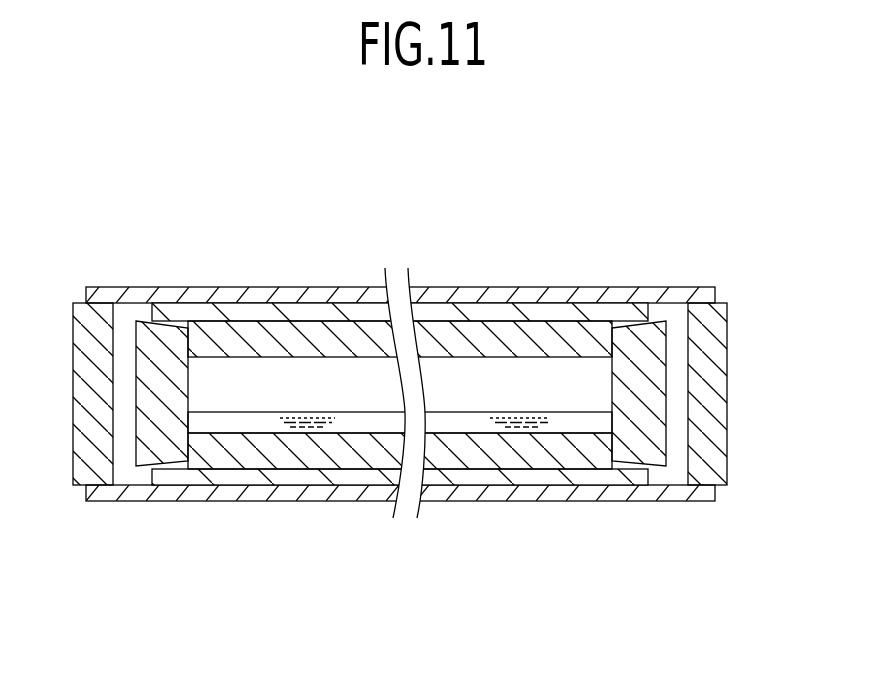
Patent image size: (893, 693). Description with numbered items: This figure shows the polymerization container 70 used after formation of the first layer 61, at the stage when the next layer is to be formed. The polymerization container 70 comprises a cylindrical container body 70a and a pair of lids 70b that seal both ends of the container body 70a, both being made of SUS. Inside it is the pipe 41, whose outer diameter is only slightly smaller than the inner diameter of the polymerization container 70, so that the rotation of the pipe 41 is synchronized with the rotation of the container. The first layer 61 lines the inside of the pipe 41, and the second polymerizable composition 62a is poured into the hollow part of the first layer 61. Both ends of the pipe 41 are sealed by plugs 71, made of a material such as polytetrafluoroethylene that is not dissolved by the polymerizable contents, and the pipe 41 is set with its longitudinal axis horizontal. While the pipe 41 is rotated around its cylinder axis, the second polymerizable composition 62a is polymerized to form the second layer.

The polymerization container 70 is at (401, 325).
The container body 70a is at (521, 288).
The lid 70b is at (728, 313).
The plug 71 is at (147, 321).
The pipe 41 is at (200, 318).
The first layer 61 is at (245, 335).
The second polymerizable composition 62a is at (206, 427).